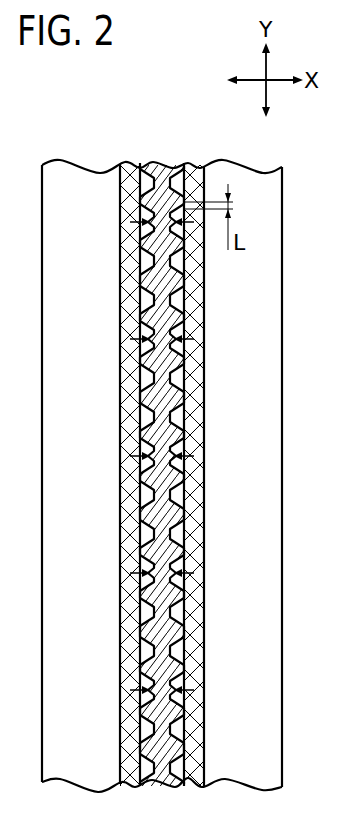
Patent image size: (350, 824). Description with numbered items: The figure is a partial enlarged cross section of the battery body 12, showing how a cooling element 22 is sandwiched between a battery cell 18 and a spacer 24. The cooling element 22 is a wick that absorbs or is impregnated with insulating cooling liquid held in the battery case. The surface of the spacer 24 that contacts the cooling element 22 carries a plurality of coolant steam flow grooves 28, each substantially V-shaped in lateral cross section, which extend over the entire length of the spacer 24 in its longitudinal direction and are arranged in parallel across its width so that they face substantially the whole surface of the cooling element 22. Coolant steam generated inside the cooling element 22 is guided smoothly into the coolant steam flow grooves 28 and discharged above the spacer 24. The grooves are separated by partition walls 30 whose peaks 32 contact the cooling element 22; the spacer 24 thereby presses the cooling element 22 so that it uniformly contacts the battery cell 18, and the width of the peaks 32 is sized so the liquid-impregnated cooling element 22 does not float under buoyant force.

The battery body 12 is at (73, 86).
The battery cell 18 is at (76, 178).
The cooling element 22 is at (130, 169).
The spacer 24 is at (161, 171).
The coolant steam flow groove 28 is at (173, 300).
The partition wall 30 is at (150, 319).
The peak 32 is at (140, 281).